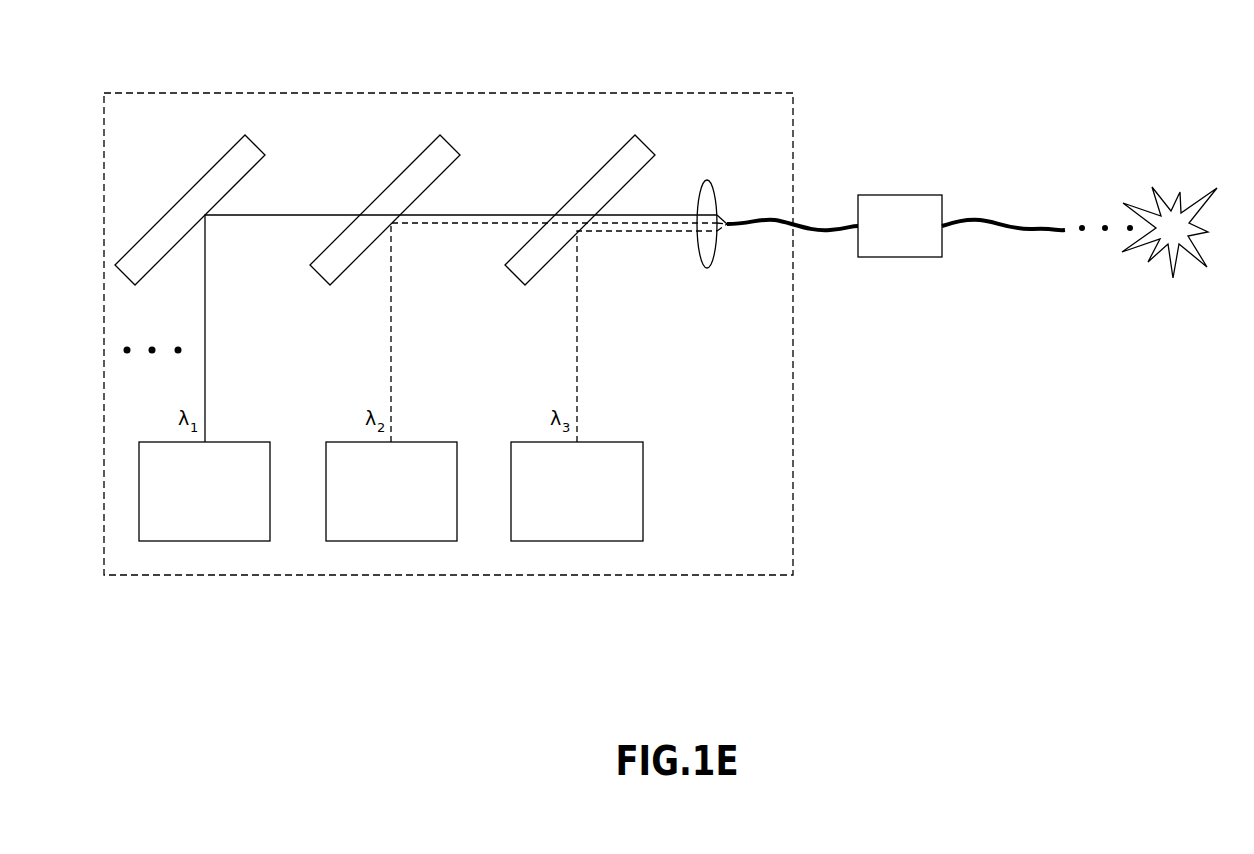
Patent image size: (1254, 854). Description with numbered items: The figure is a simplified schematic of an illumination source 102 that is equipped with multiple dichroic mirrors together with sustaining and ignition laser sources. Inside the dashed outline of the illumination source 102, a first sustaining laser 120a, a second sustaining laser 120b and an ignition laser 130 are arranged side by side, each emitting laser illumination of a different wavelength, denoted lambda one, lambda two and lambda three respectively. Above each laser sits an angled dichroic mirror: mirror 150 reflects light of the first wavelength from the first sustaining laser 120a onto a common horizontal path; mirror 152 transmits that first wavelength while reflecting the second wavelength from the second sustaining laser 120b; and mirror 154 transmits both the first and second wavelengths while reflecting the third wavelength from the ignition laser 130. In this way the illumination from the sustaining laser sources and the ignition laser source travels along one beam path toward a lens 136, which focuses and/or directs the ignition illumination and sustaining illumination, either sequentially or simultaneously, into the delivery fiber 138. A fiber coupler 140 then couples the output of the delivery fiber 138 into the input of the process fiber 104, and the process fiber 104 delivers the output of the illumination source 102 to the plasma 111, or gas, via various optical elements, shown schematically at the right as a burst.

The illumination source 102 is at (148, 53).
The mirror 150 is at (253, 143).
The mirror 152 is at (448, 143).
The mirror 154 is at (643, 143).
The lens 136 is at (707, 180).
The delivery fiber 138 is at (775, 221).
The fiber coupler 140 is at (900, 226).
The process fiber 104 is at (1003, 222).
The plasma 111 is at (1165, 248).
The first sustaining laser 120a is at (204, 491).
The second sustaining laser 120b is at (391, 491).
The ignition laser 130 is at (577, 491).